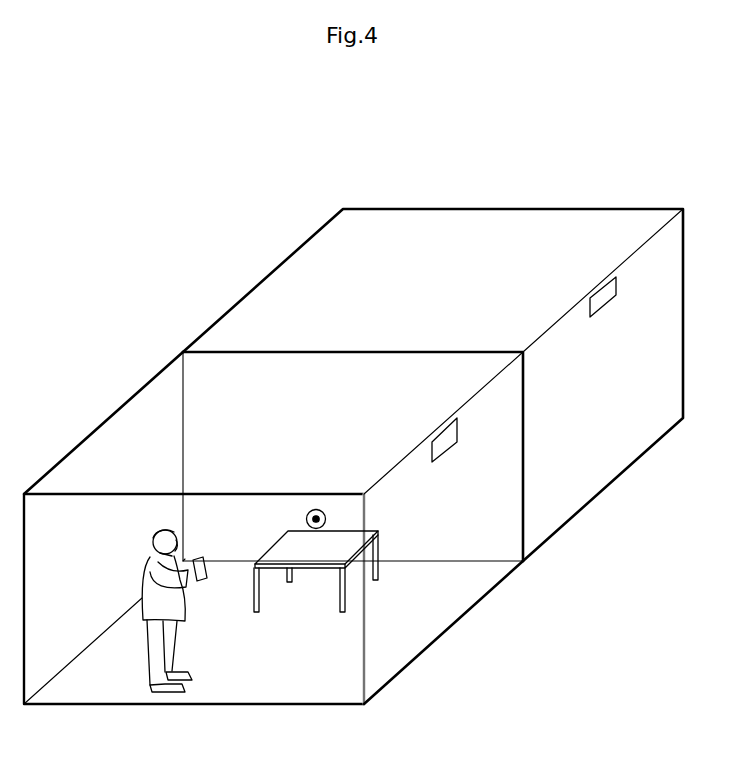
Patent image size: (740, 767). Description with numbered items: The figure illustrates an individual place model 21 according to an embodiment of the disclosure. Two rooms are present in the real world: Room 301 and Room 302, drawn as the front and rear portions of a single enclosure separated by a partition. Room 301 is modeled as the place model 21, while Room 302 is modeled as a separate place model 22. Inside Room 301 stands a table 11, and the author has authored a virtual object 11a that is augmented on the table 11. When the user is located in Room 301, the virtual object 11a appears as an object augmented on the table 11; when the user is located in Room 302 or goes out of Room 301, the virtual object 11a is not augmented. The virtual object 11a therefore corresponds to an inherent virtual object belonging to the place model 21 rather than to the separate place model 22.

The place model 21 is at (113, 413).
The place model 22 is at (388, 208).
The table 11 is at (282, 546).
The virtual object 11a is at (316, 508).
The Room 301 is at (444, 440).
The Room 302 is at (603, 297).